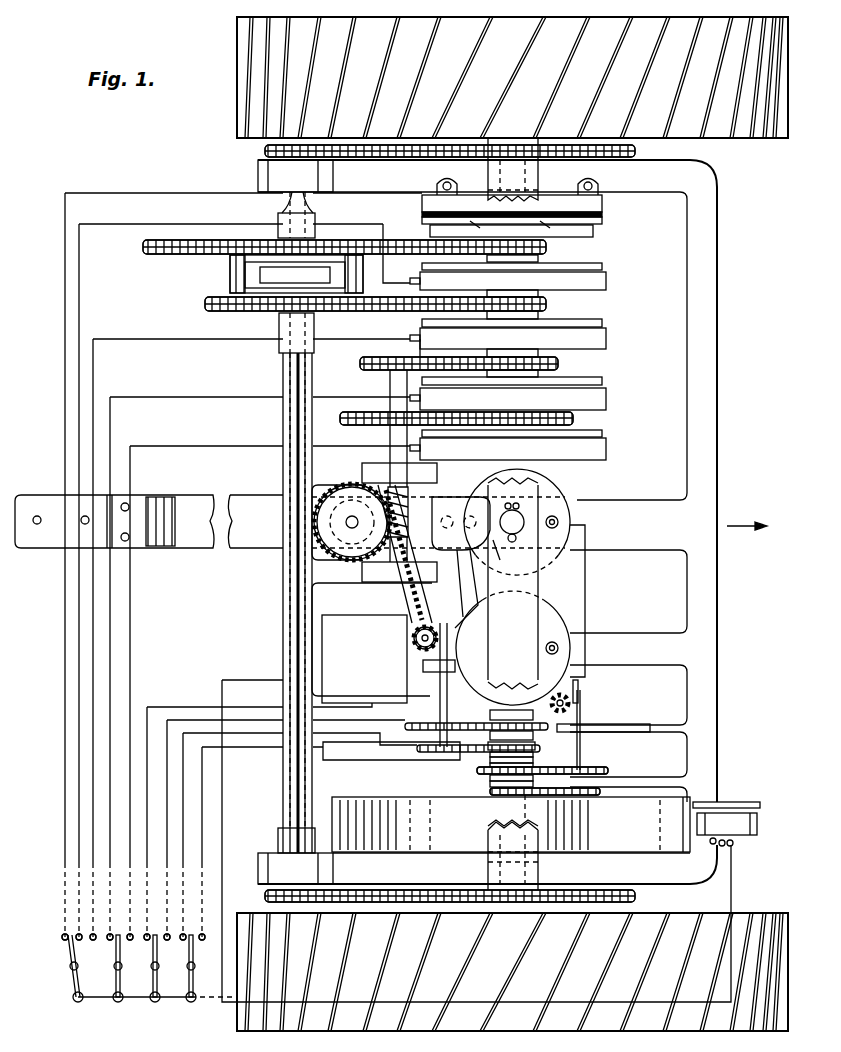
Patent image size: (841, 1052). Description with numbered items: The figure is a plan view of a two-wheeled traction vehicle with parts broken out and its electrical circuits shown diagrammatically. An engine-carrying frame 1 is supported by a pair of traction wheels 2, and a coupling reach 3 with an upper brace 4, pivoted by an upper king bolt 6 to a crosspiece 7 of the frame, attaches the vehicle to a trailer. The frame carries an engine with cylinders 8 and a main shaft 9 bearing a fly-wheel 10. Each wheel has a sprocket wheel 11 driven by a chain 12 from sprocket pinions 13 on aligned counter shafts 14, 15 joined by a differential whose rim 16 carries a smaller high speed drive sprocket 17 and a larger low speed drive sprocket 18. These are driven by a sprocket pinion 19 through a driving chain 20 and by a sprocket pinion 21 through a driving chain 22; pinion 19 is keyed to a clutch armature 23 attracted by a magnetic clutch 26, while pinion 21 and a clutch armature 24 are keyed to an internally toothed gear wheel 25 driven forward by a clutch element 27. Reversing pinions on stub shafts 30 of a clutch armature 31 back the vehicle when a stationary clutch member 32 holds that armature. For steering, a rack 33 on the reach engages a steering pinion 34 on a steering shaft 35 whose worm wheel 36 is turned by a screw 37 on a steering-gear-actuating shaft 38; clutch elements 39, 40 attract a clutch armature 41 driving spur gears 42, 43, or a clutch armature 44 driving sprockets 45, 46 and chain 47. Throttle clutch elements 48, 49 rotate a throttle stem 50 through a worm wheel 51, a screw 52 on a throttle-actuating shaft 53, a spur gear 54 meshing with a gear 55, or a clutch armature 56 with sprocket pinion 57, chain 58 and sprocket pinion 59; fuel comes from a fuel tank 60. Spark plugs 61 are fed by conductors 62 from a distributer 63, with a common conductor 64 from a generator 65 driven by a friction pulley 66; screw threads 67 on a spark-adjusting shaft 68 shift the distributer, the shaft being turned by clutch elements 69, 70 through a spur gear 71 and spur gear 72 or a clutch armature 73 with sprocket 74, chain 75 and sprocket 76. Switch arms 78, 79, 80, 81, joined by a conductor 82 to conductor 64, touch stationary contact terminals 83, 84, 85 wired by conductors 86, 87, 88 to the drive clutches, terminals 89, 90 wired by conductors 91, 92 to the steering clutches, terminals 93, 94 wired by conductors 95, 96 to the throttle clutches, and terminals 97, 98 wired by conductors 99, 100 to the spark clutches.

The engine-carrying frame 1 is at (268, 596).
The traction wheels 2 is at (258, 92).
The reach 3 is at (149, 521).
The brace 4 is at (163, 545).
The upper king bolt 6 is at (514, 516).
The crosspiece 7 is at (510, 187).
The cylinders 8 is at (550, 490).
The main shaft 9 is at (490, 822).
The fly-wheel 10 is at (511, 824).
The sprocket wheels 11 is at (637, 151).
The chains 12 is at (405, 140).
The sprocket pinions 13 is at (263, 151).
The counter shaft 14 is at (285, 205).
The counter shaft 15 is at (290, 369).
The rim of equalizing gear 16 is at (231, 265).
The high speed drive sprocket 17 is at (205, 304).
The low speed drive sprocket 18 is at (143, 246).
The sprocket pinion 19 is at (547, 304).
The driving chain 20 is at (275, 311).
The sprocket pinion 21 is at (547, 248).
The driving chain 22 is at (384, 240).
The clutch armature 23 is at (602, 323).
The clutch armature 24 is at (602, 266).
The internally toothed gear wheel 25 is at (593, 232).
The magnetic clutch 26 is at (606, 339).
The magnetic clutch element 27 is at (606, 281).
The stub shafts 30 is at (518, 229).
The clutch armature 31 is at (603, 221).
The stationary magnetic clutch member 32 is at (603, 203).
The segmental gear or rack 33 is at (388, 592).
The steering pinion 34 is at (352, 511).
The steering shaft 35 is at (353, 530).
The worm wheel 36 is at (330, 500).
The screw 37 is at (410, 520).
The steering-gear-actuating shaft 38 is at (396, 382).
The magnetic clutch element 39 is at (606, 452).
The magnetic clutch element 40 is at (606, 399).
The clutch armature 41 is at (602, 433).
The spur gear 42 is at (573, 418).
The spur gear 43 is at (341, 421).
The clutch armature 44 is at (602, 381).
The sprocket 45 is at (558, 364).
The sprocket 46 is at (360, 364).
The chain 47 is at (420, 356).
The magnetic clutch element 48 is at (490, 712).
The magnetic clutch element 49 is at (535, 745).
The throttle stem 50 is at (422, 626).
The worm wheel 51 is at (418, 645).
The screw 52 is at (470, 640).
The throttle-actuating shaft 53 is at (440, 686).
The spur gear 54 is at (580, 720).
The gear 55 is at (405, 726).
The clutch armature 56 is at (535, 752).
The sprocket pinion 57 is at (535, 765).
The chain 58 is at (488, 735).
The sprocket pinion 59 is at (417, 748).
The fuel tank 60 is at (364, 659).
The spark plugs 61 is at (556, 517).
The conductors 62 is at (586, 576).
The distributer 63 is at (579, 685).
The conductor 64 is at (362, 682).
The generator 65 is at (735, 826).
The friction pulley 66 is at (735, 802).
The screw threads 67 is at (569, 703).
The spark-adjusting shaft 68 is at (580, 740).
The magnetic clutch element 69 is at (535, 760).
The magnetic clutch element 70 is at (533, 778).
The spur gear 71 is at (477, 770).
The spur gear 72 is at (608, 770).
The clutch armature 73 is at (490, 785).
The sprocket 74 is at (490, 792).
The chain 75 is at (535, 797).
The sprocket 76 is at (600, 792).
The switch arm 78 is at (73, 980).
The switch arm 79 is at (116, 984).
The switch arm 80 is at (153, 984).
The switch arm 81 is at (189, 984).
The conductor 82 is at (103, 998).
The stationary contact terminal 83 is at (63, 935).
The stationary contact terminal 84 is at (78, 934).
The stationary contact terminal 85 is at (92, 940).
The conductor 86 is at (65, 228).
The conductor 87 is at (79, 258).
The conductor 88 is at (152, 339).
The stationary contact terminal 89 is at (110, 941).
The stationary contact terminal 90 is at (131, 942).
The conductor 91 is at (157, 397).
The conductor 92 is at (162, 446).
The stationary contact terminal 93 is at (147, 941).
The stationary contact terminal 94 is at (167, 941).
The conductor 95 is at (158, 707).
The conductor 96 is at (200, 720).
The stationary contact terminal 97 is at (183, 941).
The stationary contact terminal 98 is at (203, 941).
The conductor 99 is at (183, 843).
The conductor 100 is at (202, 795).